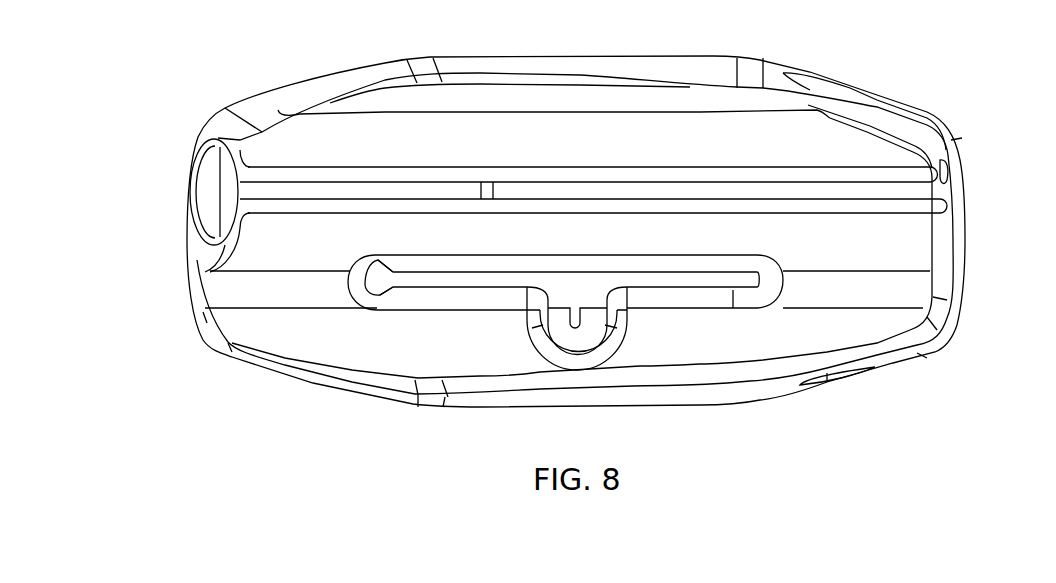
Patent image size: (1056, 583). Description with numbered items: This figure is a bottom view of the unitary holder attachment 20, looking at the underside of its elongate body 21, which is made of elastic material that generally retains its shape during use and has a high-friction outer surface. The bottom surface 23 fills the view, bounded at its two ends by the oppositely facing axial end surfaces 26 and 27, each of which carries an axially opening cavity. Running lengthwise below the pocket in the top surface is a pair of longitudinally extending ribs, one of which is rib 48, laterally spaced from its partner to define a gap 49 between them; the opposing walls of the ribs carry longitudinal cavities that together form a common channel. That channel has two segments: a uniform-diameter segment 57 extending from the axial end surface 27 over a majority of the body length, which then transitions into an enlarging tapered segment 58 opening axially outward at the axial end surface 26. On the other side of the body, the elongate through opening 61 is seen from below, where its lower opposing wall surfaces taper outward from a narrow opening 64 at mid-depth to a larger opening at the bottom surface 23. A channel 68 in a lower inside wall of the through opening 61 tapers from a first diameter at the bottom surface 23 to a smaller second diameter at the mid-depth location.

The unitary holder attachment 20 is at (931, 66).
The elongate body 21 is at (925, 101).
The bottom surface 23 is at (944, 118).
The axial end surface 26 is at (186, 243).
The axial end surface 27 is at (968, 214).
The rib 48 is at (568, 173).
The gap 49 is at (657, 192).
The uniform-diameter segment 57 is at (960, 180).
The enlarging tapered segment 58 is at (206, 194).
The elongate through opening 61 is at (427, 297).
The narrow opening 64 is at (678, 277).
The channel 68 is at (566, 344).